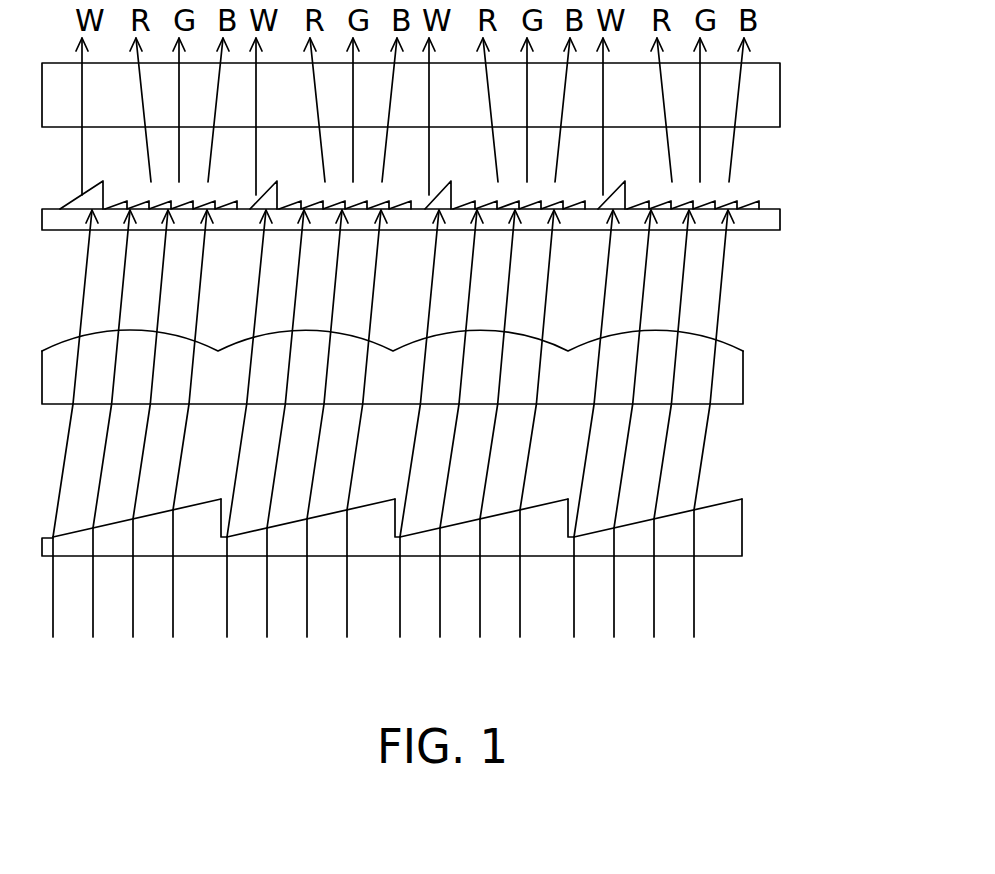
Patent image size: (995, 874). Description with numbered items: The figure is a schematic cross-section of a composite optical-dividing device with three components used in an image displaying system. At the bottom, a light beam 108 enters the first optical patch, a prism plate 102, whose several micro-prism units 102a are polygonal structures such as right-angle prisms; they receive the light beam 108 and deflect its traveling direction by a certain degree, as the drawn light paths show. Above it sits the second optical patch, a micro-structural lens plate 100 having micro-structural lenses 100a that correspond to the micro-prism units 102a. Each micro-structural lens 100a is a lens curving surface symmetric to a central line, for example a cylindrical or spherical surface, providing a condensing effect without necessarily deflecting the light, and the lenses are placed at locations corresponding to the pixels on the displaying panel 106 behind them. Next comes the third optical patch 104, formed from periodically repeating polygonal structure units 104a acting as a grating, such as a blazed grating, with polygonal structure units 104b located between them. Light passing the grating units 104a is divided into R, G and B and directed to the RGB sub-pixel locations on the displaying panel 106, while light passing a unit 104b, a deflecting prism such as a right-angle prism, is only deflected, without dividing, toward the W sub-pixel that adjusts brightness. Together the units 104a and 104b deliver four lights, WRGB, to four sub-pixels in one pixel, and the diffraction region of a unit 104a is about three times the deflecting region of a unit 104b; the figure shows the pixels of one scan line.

The displaying panel 106 is at (755, 86).
The third optical patch 104 is at (767, 220).
The polygonal structure units 104a is at (762, 202).
The polygonal structure units 104b is at (620, 192).
The micro-structural lens plate 100 is at (728, 390).
The micro-structural lens 100a is at (733, 342).
The prism plate 102 is at (718, 532).
The micro-prism units 102a is at (717, 502).
The light beam 108 is at (694, 590).